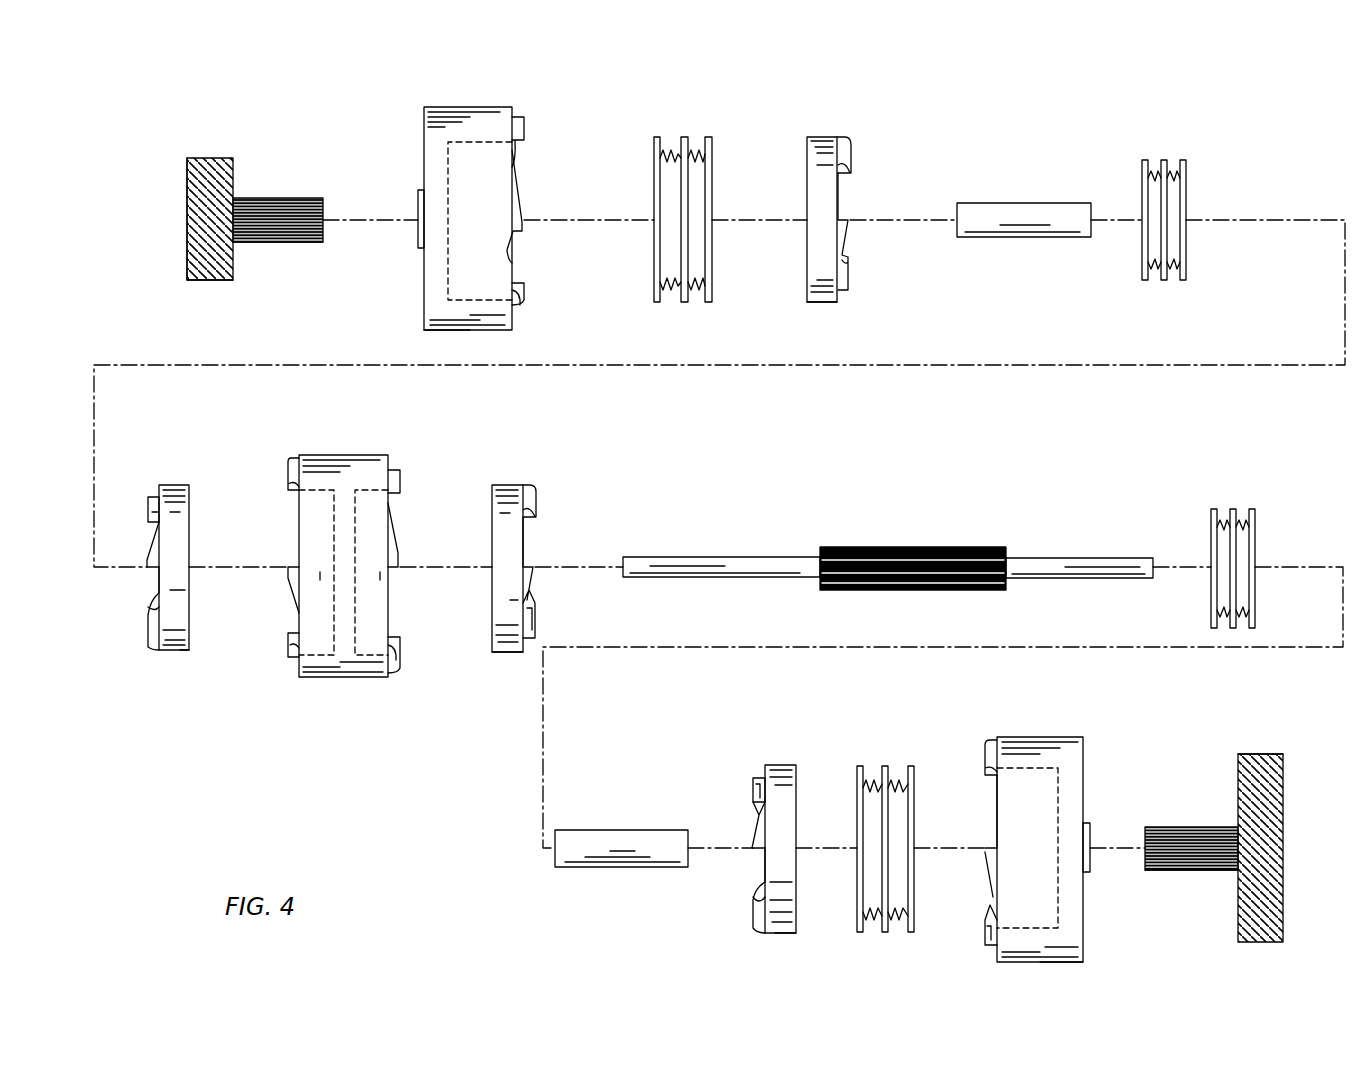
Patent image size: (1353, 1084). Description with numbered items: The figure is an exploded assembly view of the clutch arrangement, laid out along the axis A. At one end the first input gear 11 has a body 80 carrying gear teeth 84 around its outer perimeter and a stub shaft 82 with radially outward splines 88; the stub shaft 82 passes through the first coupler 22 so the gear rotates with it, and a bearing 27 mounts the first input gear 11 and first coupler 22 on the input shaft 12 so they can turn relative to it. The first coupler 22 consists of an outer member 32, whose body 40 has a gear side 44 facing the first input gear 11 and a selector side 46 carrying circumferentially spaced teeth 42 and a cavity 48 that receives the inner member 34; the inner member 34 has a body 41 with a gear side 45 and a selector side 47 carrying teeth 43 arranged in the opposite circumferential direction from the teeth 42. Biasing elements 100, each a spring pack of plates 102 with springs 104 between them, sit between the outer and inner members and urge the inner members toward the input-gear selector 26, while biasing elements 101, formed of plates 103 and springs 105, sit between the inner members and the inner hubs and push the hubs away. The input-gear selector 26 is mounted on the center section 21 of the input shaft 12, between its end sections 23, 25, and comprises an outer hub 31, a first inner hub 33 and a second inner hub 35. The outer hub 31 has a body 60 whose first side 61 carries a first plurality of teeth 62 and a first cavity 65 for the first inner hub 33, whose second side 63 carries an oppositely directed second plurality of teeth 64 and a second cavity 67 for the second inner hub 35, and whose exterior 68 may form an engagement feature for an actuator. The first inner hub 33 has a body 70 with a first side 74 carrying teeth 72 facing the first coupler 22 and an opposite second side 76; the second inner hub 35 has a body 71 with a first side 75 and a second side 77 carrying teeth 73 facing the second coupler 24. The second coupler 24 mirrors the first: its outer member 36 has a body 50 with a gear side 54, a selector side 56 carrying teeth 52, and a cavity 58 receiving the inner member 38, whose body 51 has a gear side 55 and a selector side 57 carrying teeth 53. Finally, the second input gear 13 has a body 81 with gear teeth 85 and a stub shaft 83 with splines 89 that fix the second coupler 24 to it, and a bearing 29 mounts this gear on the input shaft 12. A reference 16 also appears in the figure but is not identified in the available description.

The first input gear 11 is at (211, 198).
The body 80 is at (236, 161).
The stub shaft 82 is at (285, 197).
The gear teeth 84 is at (213, 280).
The splines 88 is at (282, 243).
The first coupler 22 is at (446, 202).
The outer member 32 is at (463, 107).
The body 40 is at (478, 113).
The teeth 42 is at (518, 203).
The gear side 44 is at (420, 263).
The selector side 46 is at (517, 303).
The cavity 48 is at (483, 228).
The biasing elements 100 is at (780, 501).
The plates 102 is at (683, 140).
The springs 104 is at (693, 293).
The inner member 34 is at (876, 191).
The body 41 is at (840, 130).
The teeth 43 is at (857, 142).
The selector side 47 is at (840, 187).
The gear side 45 is at (807, 283).
The bearing 27 is at (1023, 202).
The biasing elements 101 is at (1207, 344).
The plates 103 is at (1185, 158).
The springs 105 is at (1153, 187).
The torque path axis 16 is at (1255, 148).
The first inner hub 33 is at (163, 543).
The body 70 is at (183, 478).
The teeth 72 is at (147, 510).
The first side 74 is at (160, 592).
The second side 76 is at (190, 637).
The outer hub 31 is at (343, 557).
The body 60 is at (332, 457).
The first side 61 is at (297, 547).
The first plurality of teeth 62 is at (287, 480).
The second side 63 is at (383, 613).
The second plurality of teeth 64 is at (395, 460).
The first cavity 65 is at (318, 568).
The second cavity 67 is at (382, 568).
The exterior 68 is at (337, 493).
The second inner hub 35 is at (549, 542).
The body 71 is at (522, 477).
The teeth 73 is at (540, 480).
The second side 77 is at (525, 540).
The first side 75 is at (492, 645).
The input-gear selector 26 is at (558, 542).
The input shaft 12 is at (888, 522).
The center section 21 is at (907, 542).
The end section 23 is at (737, 557).
The end section 25 is at (1120, 557).
The axis A is at (1293, 567).
The bearing 29 is at (617, 830).
The second coupler 24 is at (719, 814).
The inner member 38 is at (740, 814).
The body 51 is at (790, 762).
The teeth 53 is at (750, 778).
The gear side 55 is at (795, 923).
The selector side 57 is at (760, 880).
The outer member 36 is at (1051, 809).
The body 50 is at (1073, 795).
The teeth 52 is at (983, 757).
The gear side 54 is at (1085, 927).
The selector side 56 is at (997, 828).
The cavity 58 is at (1027, 797).
The second input gear 13 is at (1246, 803).
The body 81 is at (1287, 768).
The stub shaft 83 is at (1187, 820).
The gear teeth 85 is at (1245, 757).
The splines 89 is at (1203, 872).